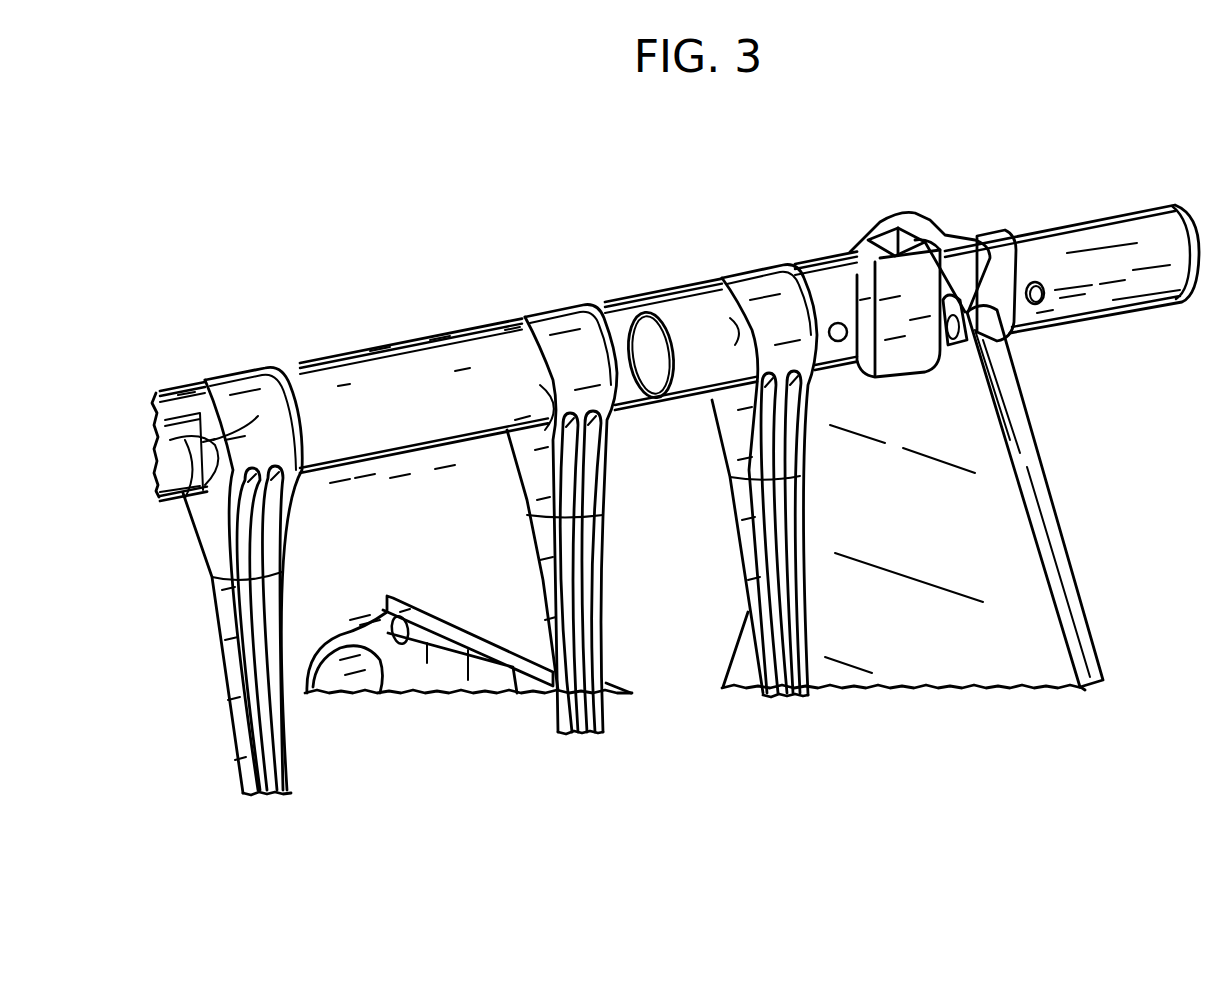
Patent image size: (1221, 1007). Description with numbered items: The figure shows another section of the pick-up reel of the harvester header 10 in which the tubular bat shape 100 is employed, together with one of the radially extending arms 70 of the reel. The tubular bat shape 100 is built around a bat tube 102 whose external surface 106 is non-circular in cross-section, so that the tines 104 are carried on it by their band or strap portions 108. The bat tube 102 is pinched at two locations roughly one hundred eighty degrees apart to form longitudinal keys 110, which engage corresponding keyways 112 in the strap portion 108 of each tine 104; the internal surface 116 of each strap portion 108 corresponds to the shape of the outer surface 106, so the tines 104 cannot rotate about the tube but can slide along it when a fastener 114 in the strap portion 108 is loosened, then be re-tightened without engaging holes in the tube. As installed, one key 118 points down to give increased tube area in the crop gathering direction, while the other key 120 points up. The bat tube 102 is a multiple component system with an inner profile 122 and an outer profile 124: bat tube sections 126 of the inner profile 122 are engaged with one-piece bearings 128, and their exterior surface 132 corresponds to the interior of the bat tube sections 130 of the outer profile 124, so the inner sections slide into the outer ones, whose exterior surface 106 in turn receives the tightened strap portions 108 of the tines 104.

The harvester header 10 is at (1078, 465).
The arm 70 is at (1032, 617).
The tubular bat shape 100 is at (425, 322).
The bat tube 102 is at (462, 366).
The tine 104 is at (250, 350).
The external surface 106 is at (344, 386).
The band or strap portion 108 is at (243, 398).
The key 110 is at (380, 346).
The keyway 112 is at (183, 393).
The fastener 114 is at (548, 396).
The internal surface 116 is at (258, 416).
The key pointing down 118 is at (338, 484).
The key pointing up 120 is at (438, 343).
The inner profile 122 is at (1016, 218).
The outer profile 124 is at (365, 490).
The bat tube section of the inner profile 126 is at (1072, 296).
The bearing 128 is at (914, 203).
The bat tube section of the outer profile 130 is at (441, 470).
The exterior surface 132 is at (1115, 278).